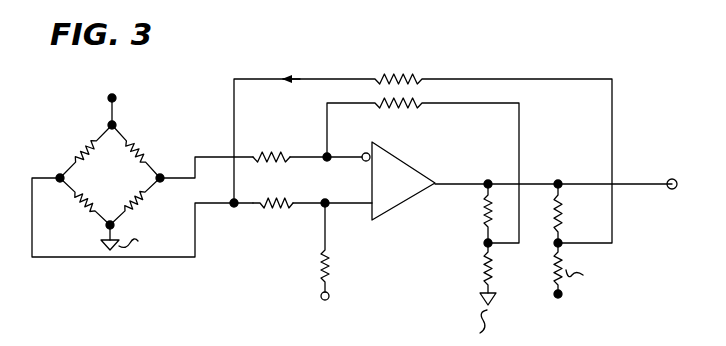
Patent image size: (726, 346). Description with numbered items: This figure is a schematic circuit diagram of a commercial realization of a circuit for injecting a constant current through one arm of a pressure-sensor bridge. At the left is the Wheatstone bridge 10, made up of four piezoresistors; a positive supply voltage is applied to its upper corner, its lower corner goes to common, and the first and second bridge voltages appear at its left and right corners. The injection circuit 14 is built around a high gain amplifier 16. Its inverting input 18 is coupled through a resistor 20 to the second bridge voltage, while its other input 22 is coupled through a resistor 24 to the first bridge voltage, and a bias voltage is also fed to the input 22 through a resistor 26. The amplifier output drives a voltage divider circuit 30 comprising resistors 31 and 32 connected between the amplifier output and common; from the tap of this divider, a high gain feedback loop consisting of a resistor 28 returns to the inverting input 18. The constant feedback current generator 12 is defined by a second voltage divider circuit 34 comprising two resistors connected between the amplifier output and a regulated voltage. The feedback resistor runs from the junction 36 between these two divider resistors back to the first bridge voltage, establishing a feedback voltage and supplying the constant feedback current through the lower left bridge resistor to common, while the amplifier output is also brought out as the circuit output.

The Wheatstone bridge 10 is at (51, 121).
The constant feedback current generator 12 is at (620, 150).
The circuit for injecting constant current 14 is at (240, 273).
The high gain amplifier 16 is at (390, 212).
The inverting input 18 is at (353, 152).
The resistor 20 is at (283, 152).
The input 22 is at (347, 207).
The resistor 24 is at (281, 210).
The resistor 26 is at (329, 268).
The feedback resistor 28 is at (405, 108).
The voltage divider circuit 30 is at (472, 261).
The resistor 31 is at (484, 212).
The resistor 32 is at (493, 278).
The voltage divider circuit 34 is at (626, 258).
The junction 36 is at (556, 244).